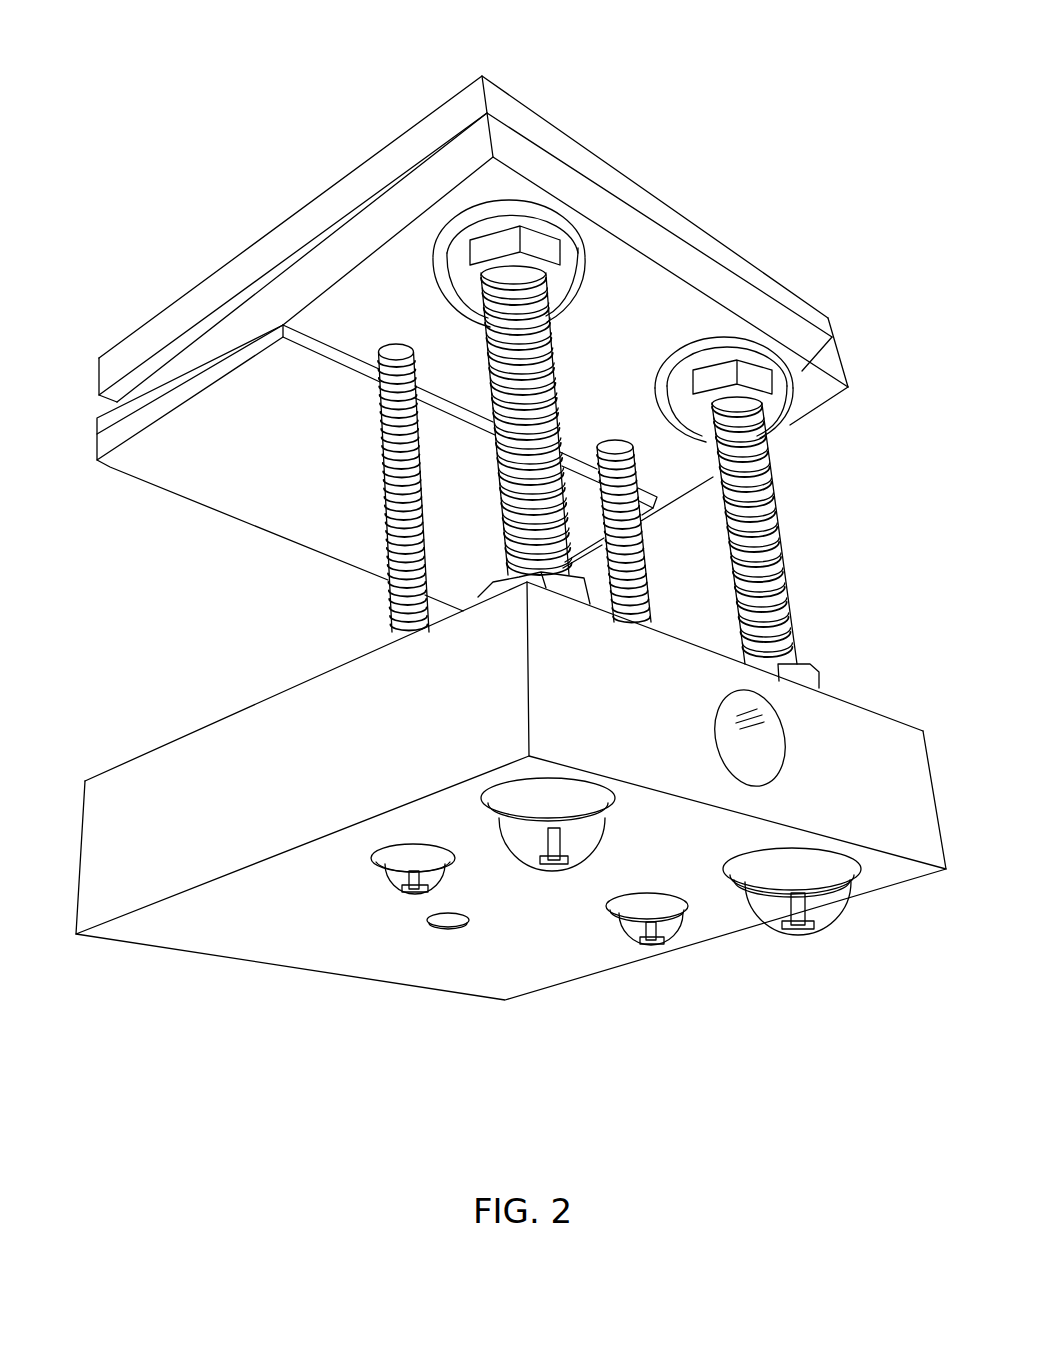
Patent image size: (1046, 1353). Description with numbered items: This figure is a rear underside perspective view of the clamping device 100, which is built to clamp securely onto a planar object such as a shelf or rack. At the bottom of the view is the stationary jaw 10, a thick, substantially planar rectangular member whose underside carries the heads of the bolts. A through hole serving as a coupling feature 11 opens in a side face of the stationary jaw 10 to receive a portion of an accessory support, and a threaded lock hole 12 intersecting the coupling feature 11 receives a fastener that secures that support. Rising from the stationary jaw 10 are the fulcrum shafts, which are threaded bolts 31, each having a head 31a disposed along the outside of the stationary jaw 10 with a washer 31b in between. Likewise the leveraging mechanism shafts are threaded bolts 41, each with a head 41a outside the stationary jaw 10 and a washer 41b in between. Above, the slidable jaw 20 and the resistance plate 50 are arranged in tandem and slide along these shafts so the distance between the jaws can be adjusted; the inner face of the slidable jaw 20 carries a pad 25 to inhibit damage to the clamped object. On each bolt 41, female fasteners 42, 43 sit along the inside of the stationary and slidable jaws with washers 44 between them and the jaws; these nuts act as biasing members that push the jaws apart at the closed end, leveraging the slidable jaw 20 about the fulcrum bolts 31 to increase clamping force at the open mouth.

The clamping device 100 is at (266, 92).
The stationary jaw 10 is at (168, 948).
The coupling feature 11 is at (775, 752).
The threaded lock hole 12 is at (438, 938).
The slidable jaw 20 is at (115, 427).
The pad 25 is at (180, 490).
The fulcrum shaft 31 is at (388, 562).
The head of fulcrum bolt 31a is at (655, 938).
The washer 31b is at (687, 916).
The leveraging shaft 41 is at (533, 397).
The head of leveraging bolt 41a is at (817, 905).
The washer 41b is at (852, 885).
The female fastener 42 is at (812, 668).
The female fastener 43 is at (550, 247).
The washer 44 is at (520, 207).
The resistance plate 50 is at (150, 338).